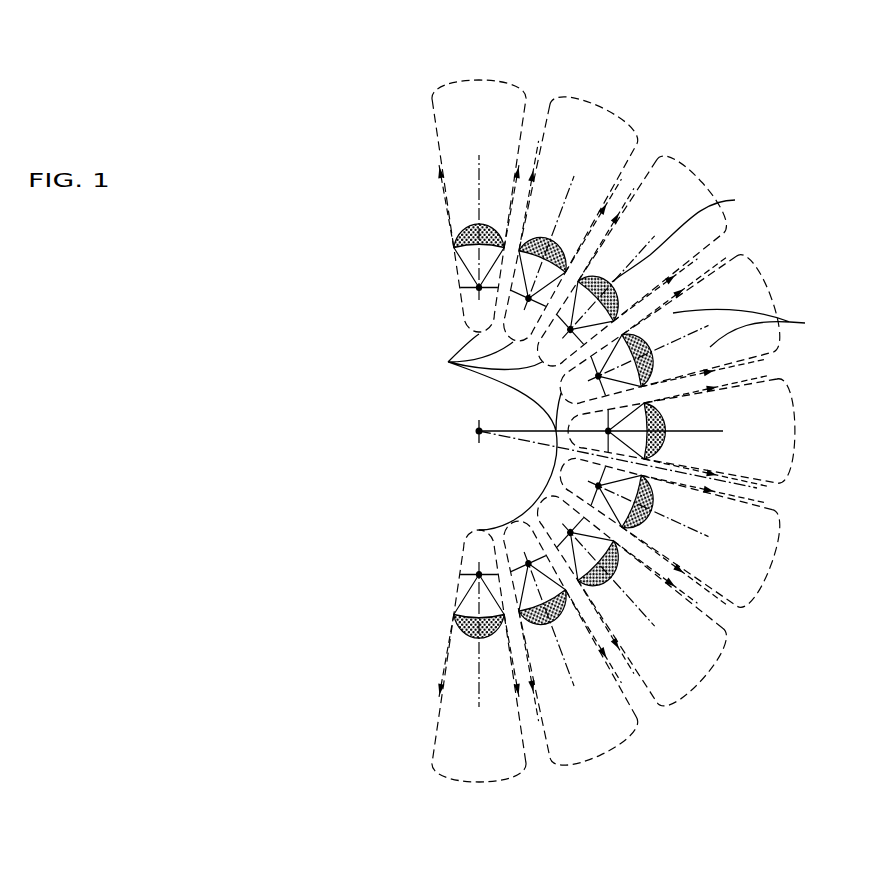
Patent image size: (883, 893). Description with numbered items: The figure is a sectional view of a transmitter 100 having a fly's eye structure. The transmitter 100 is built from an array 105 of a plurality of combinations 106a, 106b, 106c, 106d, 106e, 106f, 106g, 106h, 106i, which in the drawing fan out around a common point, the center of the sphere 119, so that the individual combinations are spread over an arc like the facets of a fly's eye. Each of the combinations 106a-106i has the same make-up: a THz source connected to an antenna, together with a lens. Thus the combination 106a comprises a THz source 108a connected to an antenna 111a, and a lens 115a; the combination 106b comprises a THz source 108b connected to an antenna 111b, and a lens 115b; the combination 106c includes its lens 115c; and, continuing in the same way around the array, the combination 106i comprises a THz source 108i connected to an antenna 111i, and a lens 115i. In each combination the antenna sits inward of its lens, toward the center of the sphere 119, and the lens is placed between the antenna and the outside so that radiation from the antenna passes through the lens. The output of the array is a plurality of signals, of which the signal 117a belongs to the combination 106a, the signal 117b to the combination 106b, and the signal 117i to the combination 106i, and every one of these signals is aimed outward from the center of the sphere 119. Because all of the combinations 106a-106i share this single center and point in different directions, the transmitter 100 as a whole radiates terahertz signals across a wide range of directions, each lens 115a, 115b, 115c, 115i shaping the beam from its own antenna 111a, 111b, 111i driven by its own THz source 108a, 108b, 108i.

The transmitter 100 is at (82, 105).
The array 105 is at (448, 362).
The combination 106a is at (471, 81).
The combination 106b is at (597, 108).
The combination 106c is at (699, 184).
The combination 106d is at (773, 287).
The combination 106e is at (795, 430).
The combination 106f is at (777, 562).
The combination 106g is at (707, 677).
The combination 106h is at (607, 757).
The combination 106i is at (478, 784).
The THz source 108a is at (477, 284).
The THz source 108b is at (525, 305).
The THz source 108i is at (478, 574).
The antenna 111a is at (458, 284).
The antenna 111b is at (515, 225).
The antenna 111i is at (455, 608).
The lens 115a is at (478, 196).
The lens 115b is at (556, 225).
The lens 115c is at (618, 250).
The lens 115i is at (478, 690).
The signal 117a is at (443, 188).
The signal 117b is at (533, 203).
The signal 117i is at (443, 665).
The center of the sphere 119 is at (479, 431).